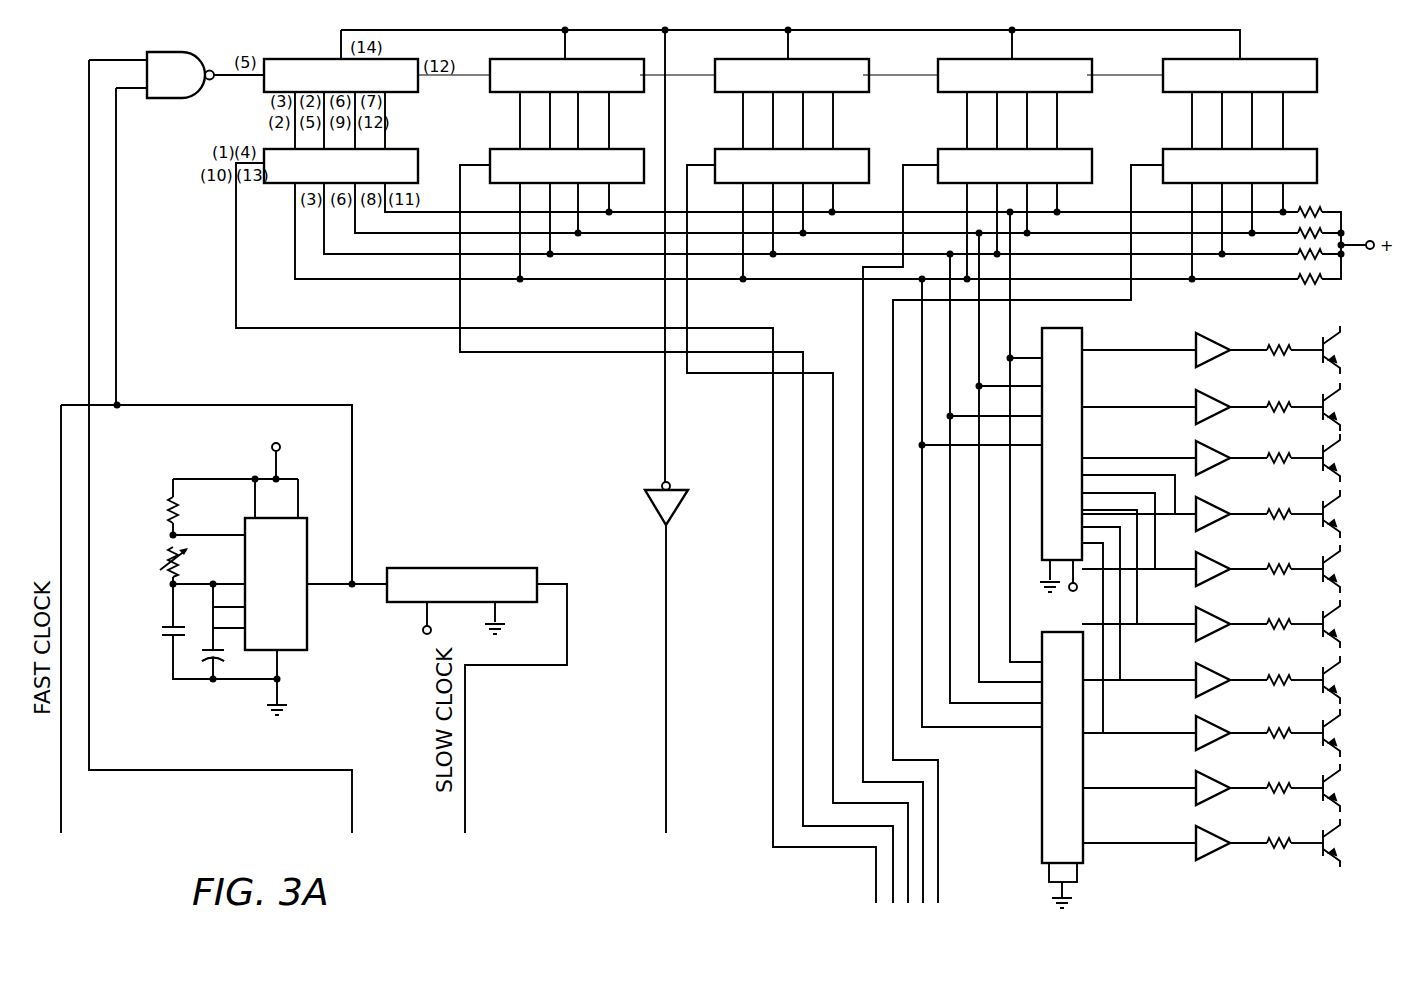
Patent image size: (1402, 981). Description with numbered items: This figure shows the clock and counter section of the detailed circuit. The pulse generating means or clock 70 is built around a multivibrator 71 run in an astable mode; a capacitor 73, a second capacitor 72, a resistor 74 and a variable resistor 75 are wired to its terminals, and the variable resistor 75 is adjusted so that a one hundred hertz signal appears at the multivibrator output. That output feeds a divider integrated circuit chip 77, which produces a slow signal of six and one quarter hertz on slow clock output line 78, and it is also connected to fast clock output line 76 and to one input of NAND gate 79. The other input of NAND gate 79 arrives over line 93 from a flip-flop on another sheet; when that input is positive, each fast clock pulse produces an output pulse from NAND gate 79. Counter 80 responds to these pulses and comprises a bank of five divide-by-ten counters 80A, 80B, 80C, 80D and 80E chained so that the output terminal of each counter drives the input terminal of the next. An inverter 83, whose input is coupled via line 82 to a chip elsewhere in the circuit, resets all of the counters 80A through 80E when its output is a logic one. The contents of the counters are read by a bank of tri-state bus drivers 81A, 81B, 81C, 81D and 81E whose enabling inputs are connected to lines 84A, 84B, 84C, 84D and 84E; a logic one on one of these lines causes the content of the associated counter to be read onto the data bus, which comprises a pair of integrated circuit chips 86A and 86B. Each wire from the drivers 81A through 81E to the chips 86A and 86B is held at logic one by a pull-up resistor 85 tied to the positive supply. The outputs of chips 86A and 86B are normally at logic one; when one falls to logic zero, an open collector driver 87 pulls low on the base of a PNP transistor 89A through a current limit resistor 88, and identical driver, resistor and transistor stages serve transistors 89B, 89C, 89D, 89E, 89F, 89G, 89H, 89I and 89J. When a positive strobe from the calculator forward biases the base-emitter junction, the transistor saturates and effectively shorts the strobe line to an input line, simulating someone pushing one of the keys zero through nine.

The clock 70 is at (256, 564).
The multivibrator 71 is at (307, 635).
The capacitor 72 is at (208, 670).
The capacitor 73 is at (170, 623).
The resistor 74 is at (170, 504).
The variable resistor 75 is at (168, 556).
The fast clock output line 76 is at (61, 452).
The divider integrated circuit chip 77 is at (480, 568).
The slow clock output line 78 is at (465, 737).
The NAND gate 79 is at (165, 98).
The counter 80 is at (246, 36).
The counter 80A is at (414, 59).
The counter 80B is at (652, 44).
The counter 80C is at (876, 44).
The counter 80D is at (1100, 44).
The counter 80E is at (1318, 44).
The tri-state bus driver 81A is at (412, 149).
The tri-state bus driver 81B is at (634, 149).
The tri-state bus driver 81C is at (858, 149).
The tri-state bus driver 81D is at (1082, 149).
The tri-state bus driver 81E is at (1310, 149).
The line 82 is at (668, 625).
The inverter 83 is at (680, 505).
The line 84A is at (773, 827).
The line 84B is at (803, 765).
The line 84C is at (833, 727).
The line 84D is at (908, 783).
The line 84E is at (938, 868).
The resistor 85 is at (1310, 210).
The integrated circuit chip 86A is at (1078, 330).
The integrated circuit chip 86B is at (1042, 799).
The open collector driver 87 is at (1215, 333).
The current limit resistor 88 is at (1280, 341).
The PNP transistor 89A is at (1335, 347).
The transistor 89B is at (1335, 404).
The transistor 89C is at (1335, 455).
The transistor 89D is at (1335, 511).
The transistor 89E is at (1335, 566).
The transistor 89F is at (1335, 621).
The transistor 89G is at (1335, 677).
The transistor 89H is at (1335, 730).
The transistor 89I is at (1335, 785).
The transistor 89J is at (1335, 840).
The output line 93 is at (352, 783).